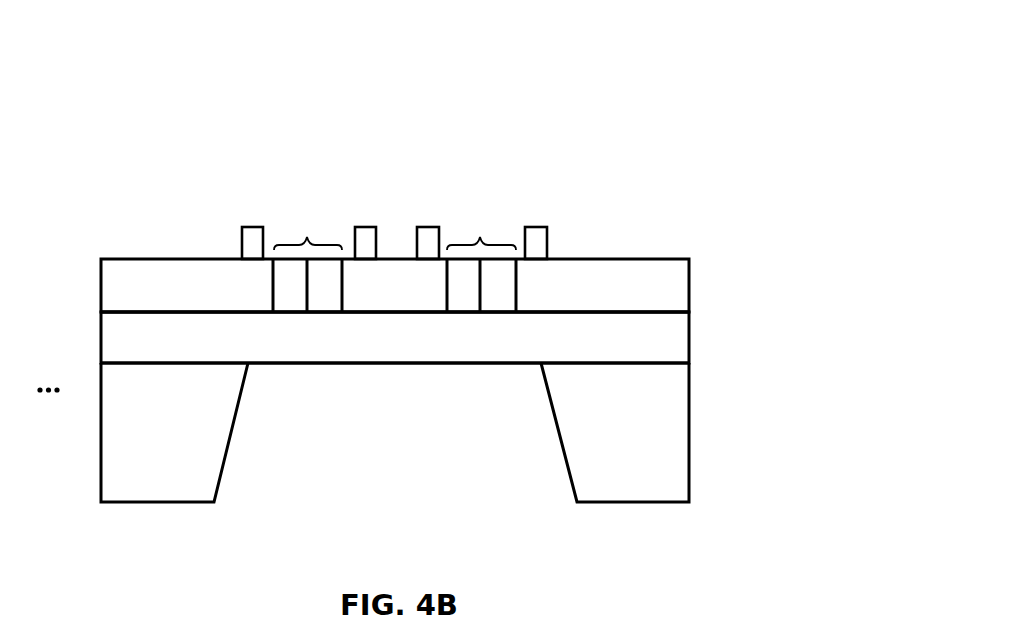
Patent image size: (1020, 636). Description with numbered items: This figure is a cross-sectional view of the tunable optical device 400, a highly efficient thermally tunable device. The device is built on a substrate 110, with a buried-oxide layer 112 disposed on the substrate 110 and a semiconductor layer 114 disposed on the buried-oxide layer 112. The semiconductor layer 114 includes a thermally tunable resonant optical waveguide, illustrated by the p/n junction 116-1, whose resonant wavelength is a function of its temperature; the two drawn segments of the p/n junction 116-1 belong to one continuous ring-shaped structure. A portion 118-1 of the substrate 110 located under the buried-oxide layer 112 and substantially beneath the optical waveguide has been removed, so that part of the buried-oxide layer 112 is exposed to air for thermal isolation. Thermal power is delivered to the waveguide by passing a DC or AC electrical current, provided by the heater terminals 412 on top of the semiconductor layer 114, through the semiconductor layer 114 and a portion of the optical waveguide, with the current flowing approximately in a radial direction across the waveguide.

The tunable optical device 400 is at (690, 78).
The semiconductor layer 114 is at (166, 285).
The p/n junction 116-1 is at (307, 236).
The portion 118-1 is at (400, 413).
The buried-oxide layer 112 is at (647, 335).
The substrate 110 is at (178, 448).
The heater terminals 412 is at (536, 249).